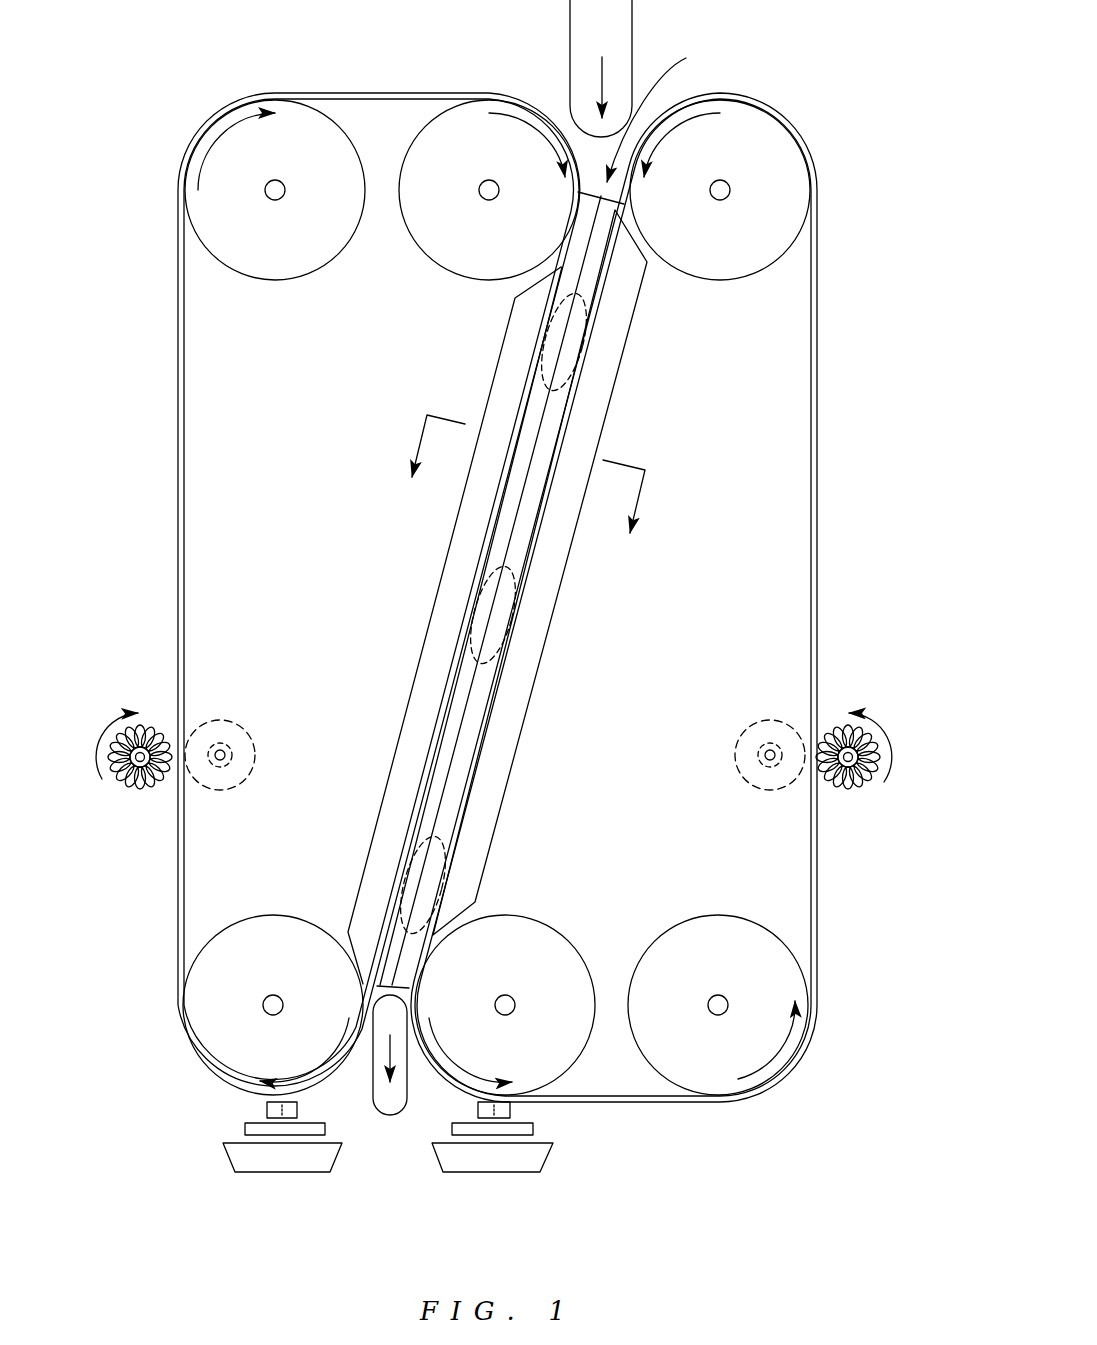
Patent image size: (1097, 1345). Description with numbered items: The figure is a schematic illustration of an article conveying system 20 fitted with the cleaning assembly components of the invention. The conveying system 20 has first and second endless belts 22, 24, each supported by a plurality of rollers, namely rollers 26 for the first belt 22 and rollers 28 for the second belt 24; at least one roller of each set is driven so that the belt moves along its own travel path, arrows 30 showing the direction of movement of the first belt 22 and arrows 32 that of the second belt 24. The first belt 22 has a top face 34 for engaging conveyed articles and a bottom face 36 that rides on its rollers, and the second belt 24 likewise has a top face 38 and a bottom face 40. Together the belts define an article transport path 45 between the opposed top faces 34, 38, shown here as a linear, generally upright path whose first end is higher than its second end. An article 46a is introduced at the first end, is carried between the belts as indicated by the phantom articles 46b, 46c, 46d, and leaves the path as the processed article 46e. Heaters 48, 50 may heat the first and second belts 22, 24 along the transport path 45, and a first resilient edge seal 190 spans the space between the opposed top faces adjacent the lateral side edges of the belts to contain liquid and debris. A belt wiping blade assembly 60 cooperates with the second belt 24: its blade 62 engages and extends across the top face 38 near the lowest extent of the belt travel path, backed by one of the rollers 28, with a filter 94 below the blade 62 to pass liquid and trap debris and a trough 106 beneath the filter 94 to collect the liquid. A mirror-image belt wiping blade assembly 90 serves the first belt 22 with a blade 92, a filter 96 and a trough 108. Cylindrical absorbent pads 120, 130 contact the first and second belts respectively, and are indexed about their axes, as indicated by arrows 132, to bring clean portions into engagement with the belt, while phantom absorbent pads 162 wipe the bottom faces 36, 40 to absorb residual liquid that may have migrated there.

The article conveying system 20 is at (862, 357).
The first endless belt 22 is at (651, 597).
The second endless belt 24 is at (339, 589).
The rollers 26 is at (738, 245).
The rollers 28 is at (291, 245).
The arrows 30 is at (681, 123).
The arrows 32 is at (208, 151).
The top face 34 is at (818, 526).
The bottom face 36 is at (811, 505).
The top face 38 is at (178, 508).
The bottom face 40 is at (185, 522).
The article transport path 45 is at (663, 114).
The article 46a is at (631, 12).
The article 46b is at (575, 359).
The article 46c is at (505, 628).
The article 46d is at (445, 878).
The processed article 46e is at (391, 1108).
The heater 48 is at (520, 682).
The heater 50 is at (440, 634).
The belt wiping blade assembly 60 is at (243, 1173).
The blade 62 is at (266, 1108).
The belt wiping blade assembly 90 is at (534, 1178).
The blade 92 is at (512, 1110).
The filter 94 is at (240, 1128).
The filter 96 is at (535, 1128).
The trough 106 is at (283, 1160).
The trough 108 is at (494, 1160).
The absorbent pad 120 is at (852, 792).
The absorbent pad 130 is at (135, 790).
The arrows 132 is at (97, 746).
The phantom absorbent pads 162 is at (236, 722).
The first resilient edge seal 190 is at (462, 766).